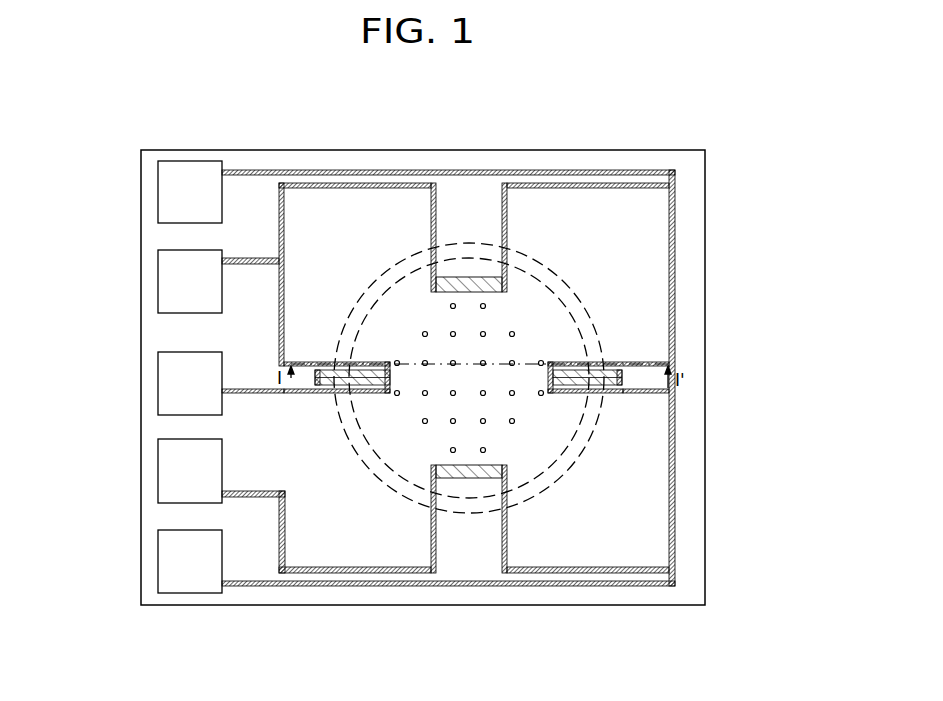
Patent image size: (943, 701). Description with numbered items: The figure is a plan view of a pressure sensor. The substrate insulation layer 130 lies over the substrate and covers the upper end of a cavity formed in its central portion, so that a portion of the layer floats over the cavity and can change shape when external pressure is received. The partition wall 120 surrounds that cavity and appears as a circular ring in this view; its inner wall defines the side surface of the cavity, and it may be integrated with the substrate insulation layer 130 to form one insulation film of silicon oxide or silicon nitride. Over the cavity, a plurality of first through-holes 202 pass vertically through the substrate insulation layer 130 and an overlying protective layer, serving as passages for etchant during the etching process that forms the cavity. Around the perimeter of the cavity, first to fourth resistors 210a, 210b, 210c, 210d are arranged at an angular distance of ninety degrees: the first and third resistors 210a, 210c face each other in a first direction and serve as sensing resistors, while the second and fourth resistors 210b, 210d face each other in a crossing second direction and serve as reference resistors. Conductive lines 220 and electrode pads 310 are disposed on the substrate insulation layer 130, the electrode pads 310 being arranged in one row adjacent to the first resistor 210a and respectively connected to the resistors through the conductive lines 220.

The substrate insulation layer 130 is at (690, 207).
The partition wall 120 is at (563, 465).
The first through-hole 202 is at (514, 333).
The conductive lines 220 is at (675, 513).
The first resistor 210a is at (318, 396).
The second resistor 210b is at (465, 277).
The third resistor 210c is at (613, 393).
The fourth resistor 210d is at (470, 473).
The electrode pads 310 is at (172, 562).